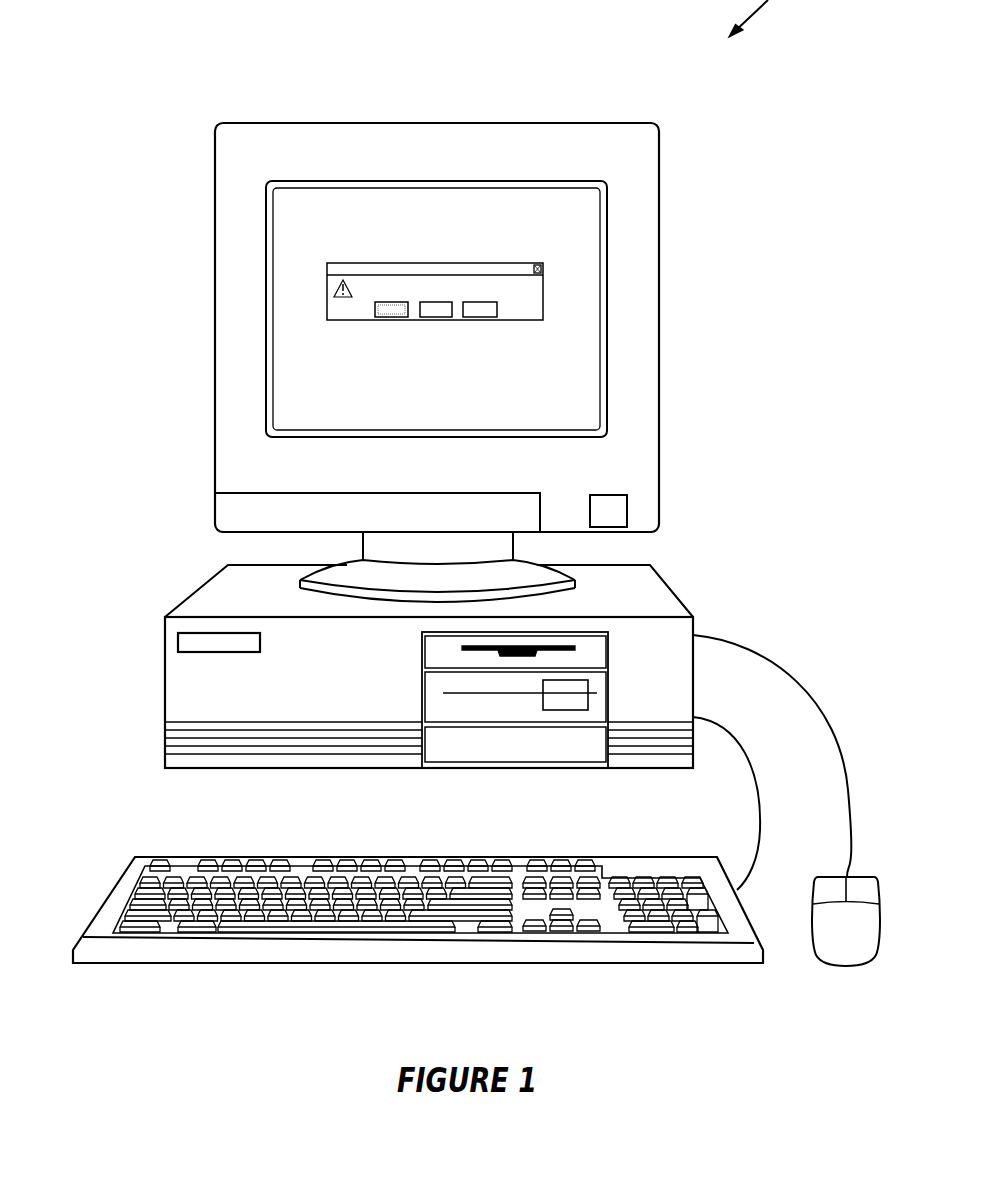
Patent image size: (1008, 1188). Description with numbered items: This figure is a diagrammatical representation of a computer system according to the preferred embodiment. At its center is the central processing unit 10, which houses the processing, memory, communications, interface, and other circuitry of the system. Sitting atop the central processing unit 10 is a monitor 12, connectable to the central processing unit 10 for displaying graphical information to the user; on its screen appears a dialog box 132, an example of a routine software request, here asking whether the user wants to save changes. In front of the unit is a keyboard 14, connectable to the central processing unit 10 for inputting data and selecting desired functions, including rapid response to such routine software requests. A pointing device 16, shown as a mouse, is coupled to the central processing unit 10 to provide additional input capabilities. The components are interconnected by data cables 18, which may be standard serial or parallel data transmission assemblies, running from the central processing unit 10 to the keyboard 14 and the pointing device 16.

The central processing unit 10 is at (165, 672).
The monitor 12 is at (443, 362).
The keyboard 14 is at (119, 882).
The pointing device 16 is at (862, 873).
The data cables 18 is at (777, 660).
The dialog box 132 is at (530, 308).